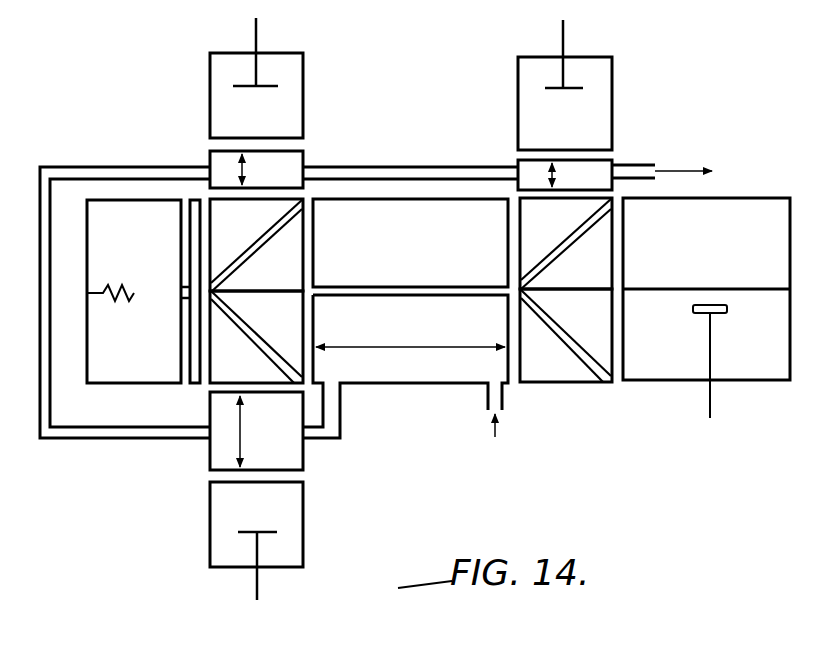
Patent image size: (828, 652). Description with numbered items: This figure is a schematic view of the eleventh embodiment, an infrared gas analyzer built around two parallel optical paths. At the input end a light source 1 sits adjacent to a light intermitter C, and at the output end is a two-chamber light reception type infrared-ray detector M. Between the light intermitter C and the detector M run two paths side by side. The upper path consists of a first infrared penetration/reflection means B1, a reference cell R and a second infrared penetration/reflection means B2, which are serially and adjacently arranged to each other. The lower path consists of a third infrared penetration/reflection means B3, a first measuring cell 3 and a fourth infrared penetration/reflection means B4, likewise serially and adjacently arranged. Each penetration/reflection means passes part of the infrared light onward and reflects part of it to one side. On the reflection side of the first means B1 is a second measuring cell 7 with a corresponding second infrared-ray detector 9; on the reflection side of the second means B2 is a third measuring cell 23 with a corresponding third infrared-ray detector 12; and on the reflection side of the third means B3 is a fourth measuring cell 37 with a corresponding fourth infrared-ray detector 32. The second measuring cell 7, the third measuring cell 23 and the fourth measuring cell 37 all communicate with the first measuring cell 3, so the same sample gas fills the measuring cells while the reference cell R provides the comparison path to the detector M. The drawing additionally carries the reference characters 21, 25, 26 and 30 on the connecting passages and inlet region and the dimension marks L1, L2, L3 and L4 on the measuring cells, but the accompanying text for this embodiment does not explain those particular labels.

The light source 1 is at (133, 385).
The first measuring cell 3 is at (445, 384).
The second measuring cell 7 is at (306, 160).
The second infrared-ray detector 9 is at (303, 88).
The third infrared-ray detector 12 is at (612, 83).
The channel 21 is at (340, 412).
The third measuring cell 23 is at (612, 160).
The return loop 25 is at (95, 440).
The waveguide lines 26 is at (403, 166).
The inlet 30 is at (494, 453).
The fourth infrared-ray detector 32 is at (303, 516).
The fourth measuring cell 37 is at (303, 458).
The light intermitter C is at (195, 385).
The two-chamber light reception type infrared-ray detector M is at (757, 198).
The reference cell R is at (413, 250).
The first infrared penetration/reflection means B1 is at (282, 228).
The second infrared penetration/reflection means B2 is at (587, 222).
The third infrared penetration/reflection means B3 is at (283, 347).
The fourth infrared penetration/reflection means B4 is at (587, 347).
The length L1 is at (410, 334).
The length L2 is at (257, 169).
The length L3 is at (567, 176).
The length L4 is at (255, 431).